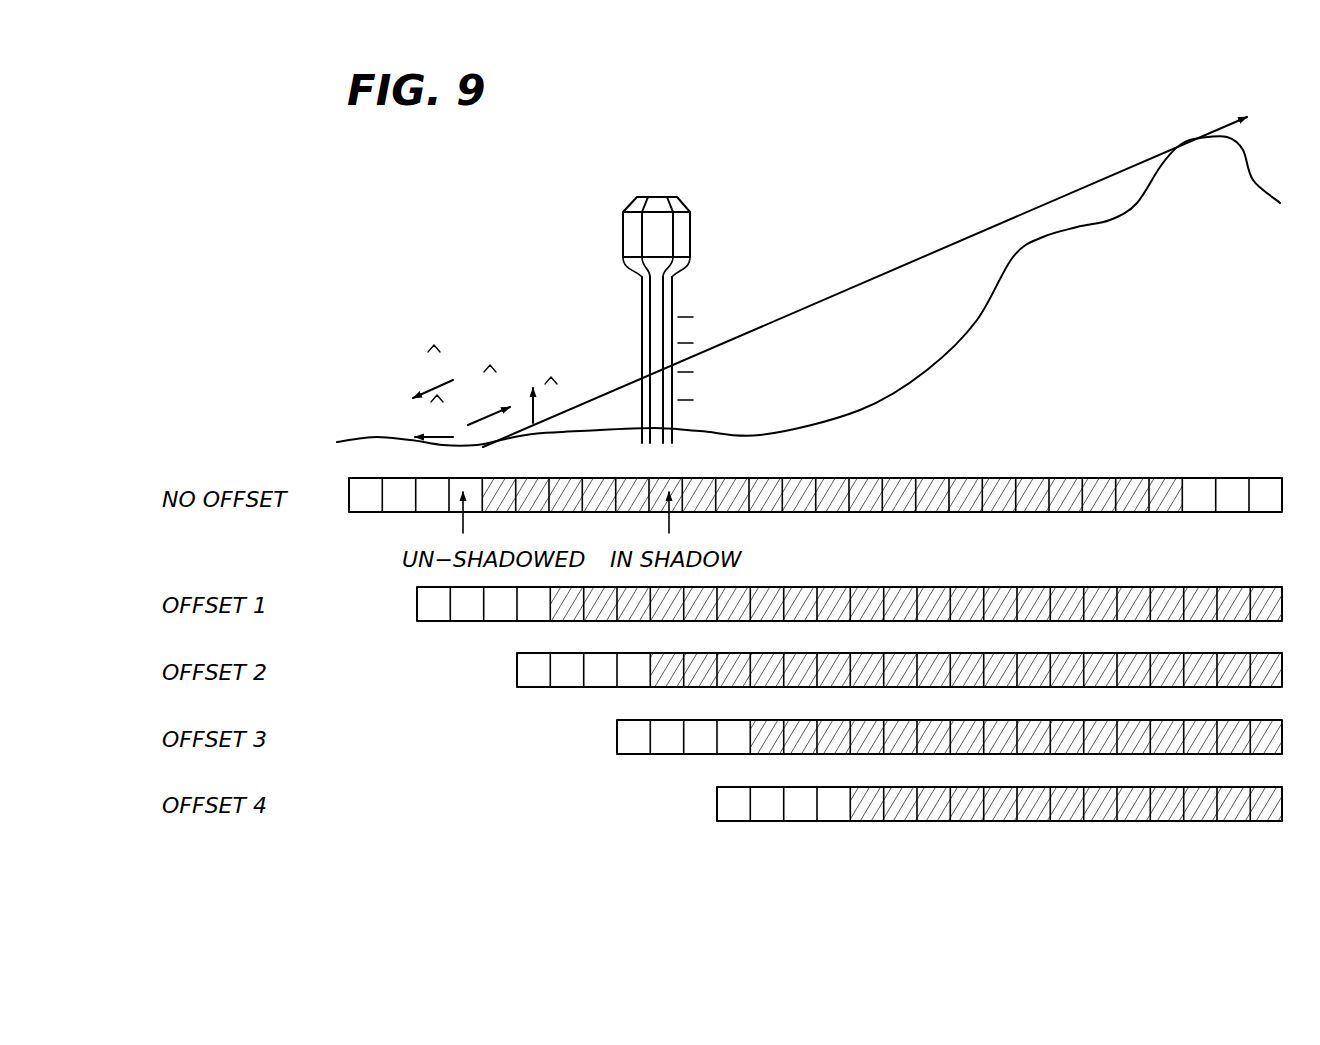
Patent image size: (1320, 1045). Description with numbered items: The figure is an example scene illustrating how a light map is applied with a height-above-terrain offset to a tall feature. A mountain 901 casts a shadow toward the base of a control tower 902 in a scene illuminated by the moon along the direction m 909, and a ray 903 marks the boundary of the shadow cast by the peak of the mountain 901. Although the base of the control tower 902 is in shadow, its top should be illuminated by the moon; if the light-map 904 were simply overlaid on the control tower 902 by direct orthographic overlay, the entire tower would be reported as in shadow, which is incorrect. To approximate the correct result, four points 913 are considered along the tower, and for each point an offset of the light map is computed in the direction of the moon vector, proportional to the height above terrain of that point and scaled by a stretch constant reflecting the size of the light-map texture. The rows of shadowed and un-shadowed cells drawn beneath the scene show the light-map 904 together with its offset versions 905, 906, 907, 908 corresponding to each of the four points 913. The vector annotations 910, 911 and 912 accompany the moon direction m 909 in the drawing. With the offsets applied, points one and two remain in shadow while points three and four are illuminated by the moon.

The mountain 901 is at (1193, 140).
The control tower 902 is at (655, 197).
The ray 903 is at (840, 290).
The light-map 904 is at (400, 512).
The offset 1 shadow map row 905 is at (493, 621).
The offset 2 shadow map row 906 is at (572, 687).
The offset 3 shadow map row 907 is at (673, 754).
The offset 4 shadow map row 908 is at (777, 821).
The direction m 909 is at (492, 362).
The vertical component vector Mz 910 is at (553, 373).
The negative unit vector -M 911 is at (427, 350).
The negative horizontal component vector -Mx 912 is at (412, 425).
The four points along the tower 913 is at (733, 310).